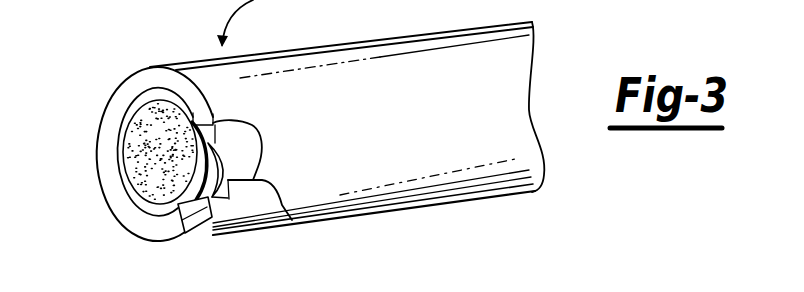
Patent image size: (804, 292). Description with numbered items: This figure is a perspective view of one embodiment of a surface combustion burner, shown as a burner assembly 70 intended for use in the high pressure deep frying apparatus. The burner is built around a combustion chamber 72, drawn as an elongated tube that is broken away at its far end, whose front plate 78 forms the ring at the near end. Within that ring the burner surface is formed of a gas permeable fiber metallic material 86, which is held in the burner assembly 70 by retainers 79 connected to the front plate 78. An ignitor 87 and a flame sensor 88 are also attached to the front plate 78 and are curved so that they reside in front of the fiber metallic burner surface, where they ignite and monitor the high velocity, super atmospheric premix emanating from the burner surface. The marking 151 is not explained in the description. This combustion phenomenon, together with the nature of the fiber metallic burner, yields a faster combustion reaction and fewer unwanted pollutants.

The burner assembly 70 is at (590, 283).
The combustion chamber 72 is at (390, 138).
The front plate 78 is at (131, 78).
The retainers 79 is at (140, 202).
The gas permeable fiber metallic material 86 is at (133, 143).
The ignitor 87 is at (211, 222).
The flame sensor 88 is at (293, 218).
The reference mark 151 is at (455, 280).